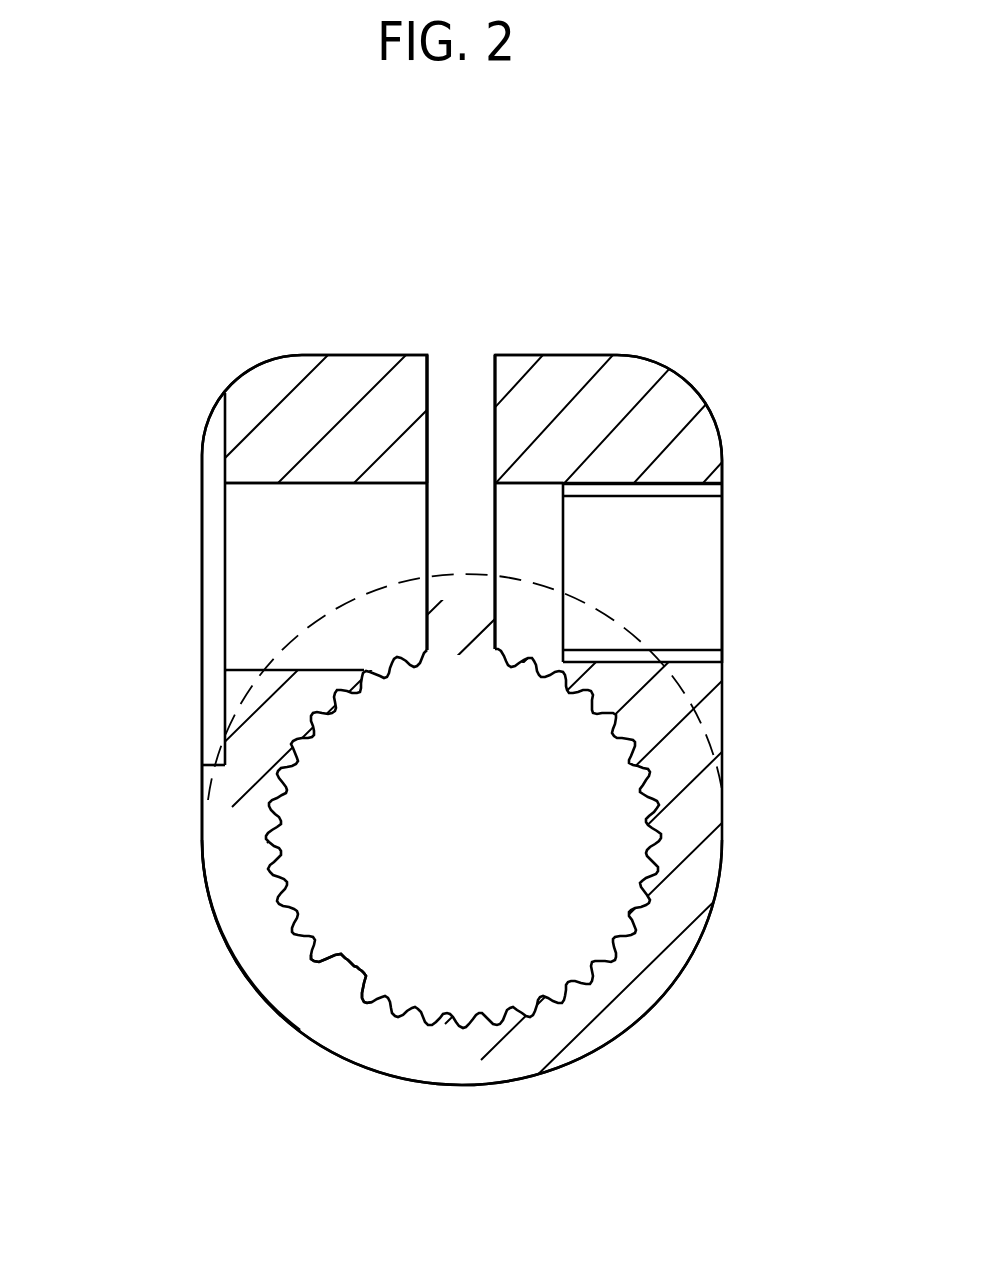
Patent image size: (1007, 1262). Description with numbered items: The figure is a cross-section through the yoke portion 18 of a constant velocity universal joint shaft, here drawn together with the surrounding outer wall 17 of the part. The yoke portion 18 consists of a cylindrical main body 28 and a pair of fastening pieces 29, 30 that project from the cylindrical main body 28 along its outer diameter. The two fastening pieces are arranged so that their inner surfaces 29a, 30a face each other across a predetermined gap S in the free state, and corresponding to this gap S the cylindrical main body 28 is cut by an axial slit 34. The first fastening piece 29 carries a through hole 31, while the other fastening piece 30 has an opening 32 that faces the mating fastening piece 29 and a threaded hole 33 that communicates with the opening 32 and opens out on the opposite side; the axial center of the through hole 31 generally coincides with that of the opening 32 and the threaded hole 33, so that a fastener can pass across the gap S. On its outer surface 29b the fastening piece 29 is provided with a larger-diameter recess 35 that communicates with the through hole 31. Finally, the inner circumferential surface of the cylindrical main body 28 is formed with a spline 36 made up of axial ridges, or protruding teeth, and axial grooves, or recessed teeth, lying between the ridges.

The shaft holder outer wall 17 is at (222, 930).
The yoke portion 18 is at (710, 362).
The cylindrical main body 28 is at (653, 1008).
The fastening piece 29 is at (290, 420).
The inner surface 29a is at (427, 398).
The outer surface 29b is at (200, 592).
The fastening piece 30 is at (690, 455).
The inner surface 30a is at (495, 414).
The gap S is at (467, 458).
The through hole 31 is at (305, 485).
The opening 32 is at (533, 487).
The threaded hole 33 is at (686, 658).
The axial slit 34 is at (462, 634).
The larger-diameter recess 35 is at (214, 765).
The spline 36 is at (347, 983).